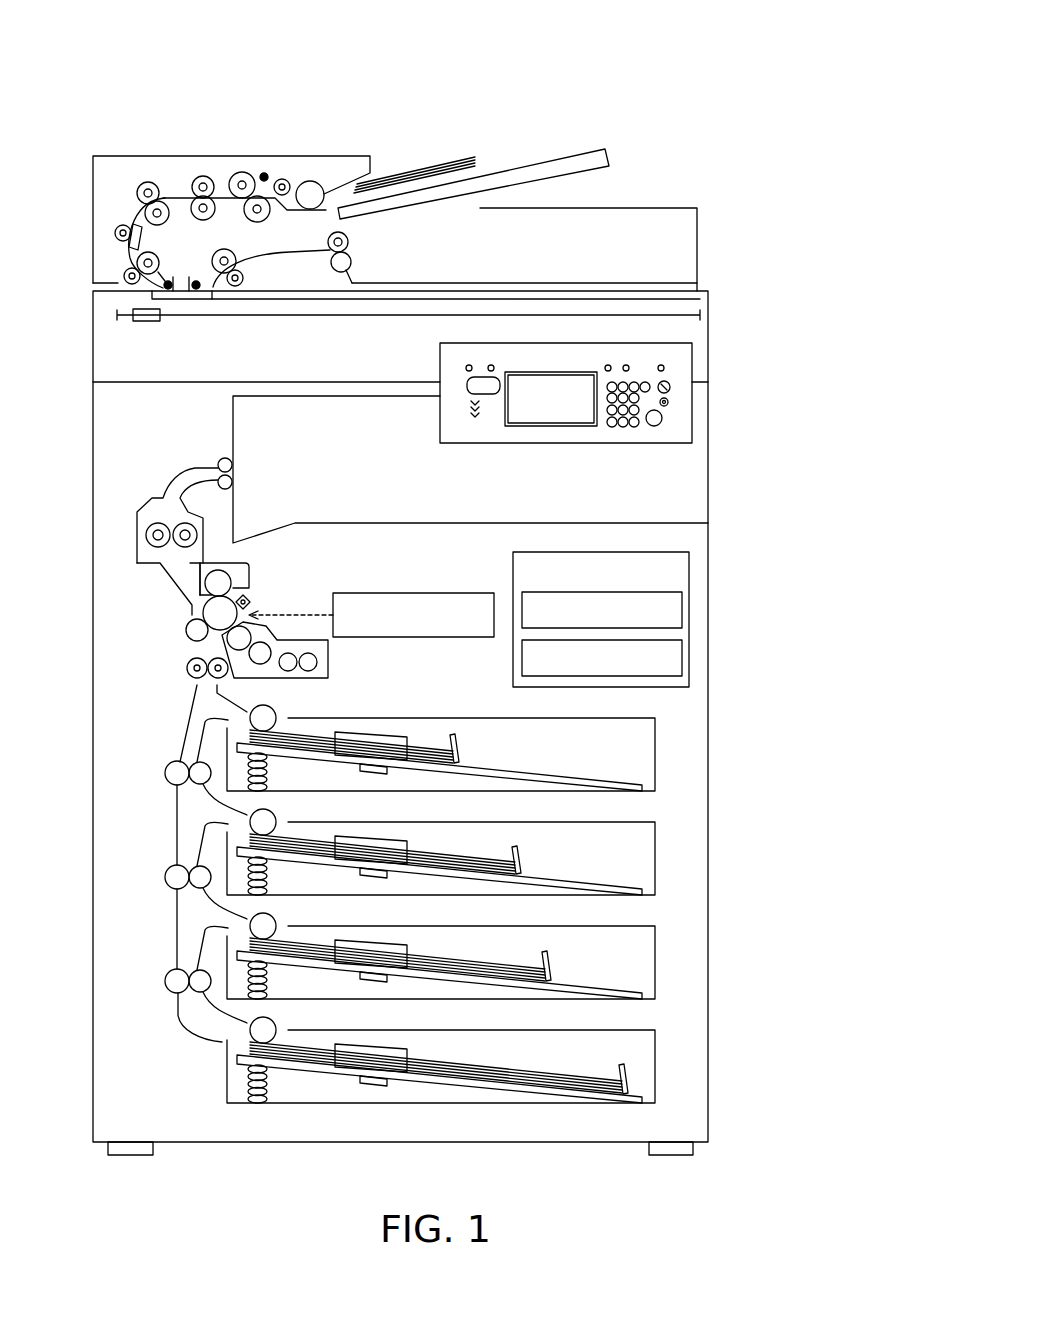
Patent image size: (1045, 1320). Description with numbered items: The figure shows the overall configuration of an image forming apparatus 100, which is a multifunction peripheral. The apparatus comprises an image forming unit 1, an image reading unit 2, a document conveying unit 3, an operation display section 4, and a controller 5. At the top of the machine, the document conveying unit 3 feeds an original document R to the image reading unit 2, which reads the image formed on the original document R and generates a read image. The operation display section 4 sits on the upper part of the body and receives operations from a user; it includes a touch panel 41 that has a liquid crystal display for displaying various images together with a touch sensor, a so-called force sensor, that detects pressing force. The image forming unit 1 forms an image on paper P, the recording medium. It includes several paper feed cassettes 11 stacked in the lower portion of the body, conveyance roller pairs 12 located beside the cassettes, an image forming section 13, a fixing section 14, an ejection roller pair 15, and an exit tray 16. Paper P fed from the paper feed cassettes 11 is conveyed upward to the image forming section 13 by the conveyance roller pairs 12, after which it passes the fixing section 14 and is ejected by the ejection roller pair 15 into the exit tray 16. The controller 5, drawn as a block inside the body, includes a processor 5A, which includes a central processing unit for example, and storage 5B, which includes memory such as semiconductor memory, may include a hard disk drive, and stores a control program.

The image forming apparatus 100 is at (672, 78).
The image forming unit 1 is at (732, 550).
The image reading unit 2 is at (712, 322).
The document conveying unit 3 is at (408, 140).
The original document R is at (460, 164).
The operation display section 4 is at (617, 443).
The touch panel 41 is at (558, 383).
The controller 5 is at (690, 577).
The processor 5A is at (682, 610).
The storage 5B is at (682, 657).
The paper feed cassette 11 is at (656, 762).
The conveyance roller pair 12 is at (165, 773).
The image forming section 13 is at (262, 592).
The fixing section 14 is at (205, 532).
The ejection roller pair 15 is at (232, 463).
The exit tray 16 is at (480, 525).
The paper P is at (435, 744).